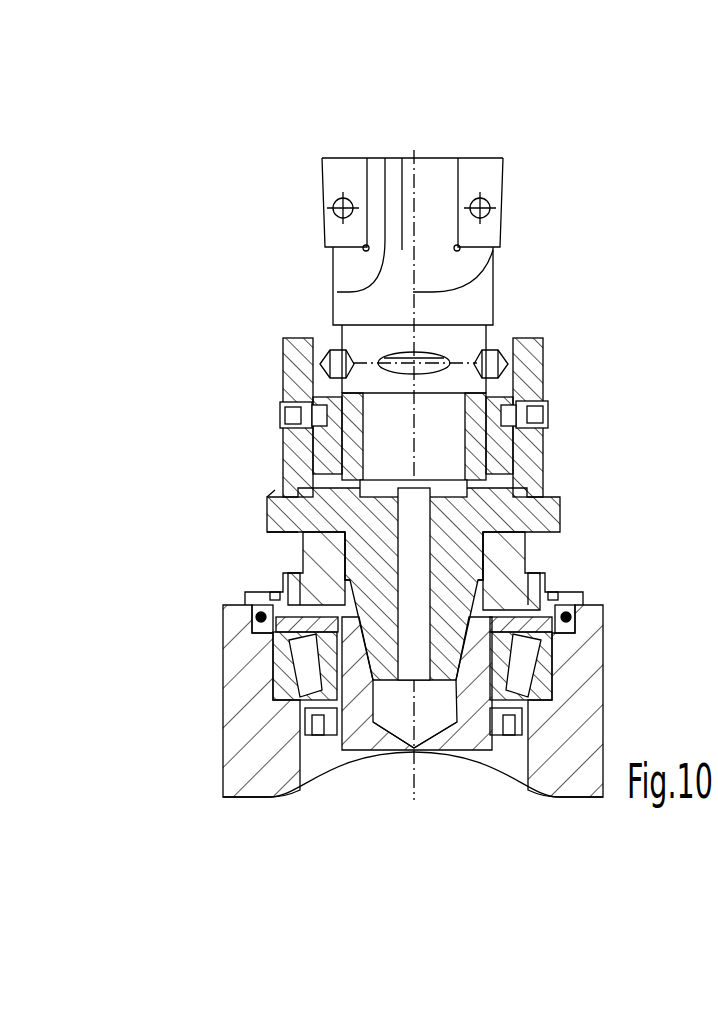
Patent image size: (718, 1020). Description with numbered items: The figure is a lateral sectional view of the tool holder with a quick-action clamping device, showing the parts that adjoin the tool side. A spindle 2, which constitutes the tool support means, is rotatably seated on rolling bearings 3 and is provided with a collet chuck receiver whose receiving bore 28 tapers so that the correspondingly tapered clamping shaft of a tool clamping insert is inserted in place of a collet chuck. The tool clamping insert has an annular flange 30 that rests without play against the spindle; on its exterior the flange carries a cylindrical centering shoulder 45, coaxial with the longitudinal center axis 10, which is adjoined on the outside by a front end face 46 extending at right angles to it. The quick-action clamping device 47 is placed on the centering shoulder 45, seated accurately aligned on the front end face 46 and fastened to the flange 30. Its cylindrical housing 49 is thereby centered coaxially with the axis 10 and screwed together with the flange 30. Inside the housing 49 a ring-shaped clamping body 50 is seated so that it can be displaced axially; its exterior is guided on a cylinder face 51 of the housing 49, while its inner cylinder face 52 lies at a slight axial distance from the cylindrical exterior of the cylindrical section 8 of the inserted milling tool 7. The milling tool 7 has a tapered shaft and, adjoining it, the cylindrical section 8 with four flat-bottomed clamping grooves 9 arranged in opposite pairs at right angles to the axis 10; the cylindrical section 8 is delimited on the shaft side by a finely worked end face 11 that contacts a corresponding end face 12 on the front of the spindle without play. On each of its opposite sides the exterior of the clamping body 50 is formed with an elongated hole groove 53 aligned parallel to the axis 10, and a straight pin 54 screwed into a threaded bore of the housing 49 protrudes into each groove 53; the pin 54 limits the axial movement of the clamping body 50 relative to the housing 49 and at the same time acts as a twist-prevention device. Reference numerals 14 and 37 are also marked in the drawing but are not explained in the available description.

The spindle 2 is at (560, 770).
The rolling bearings 3 is at (552, 662).
The milling tool 7 is at (432, 176).
The cylindrical section 8 is at (465, 338).
The clamping grooves 9 is at (386, 350).
The center axis 10 is at (415, 770).
The end face 11 is at (282, 535).
The end face 12 is at (492, 565).
The clamping housing 14 is at (500, 337).
The receiving bore 28 is at (362, 752).
The annular flange 30 is at (495, 540).
The locking ring 37 is at (480, 618).
The centering shoulder 45 is at (545, 496).
The front end face 46 is at (300, 500).
The quick-action clamping device 47 is at (555, 388).
The housing 49 is at (540, 344).
The clamping body 50 is at (313, 433).
The cylinder face 51 is at (540, 453).
The cylinder face 52 is at (313, 470).
The elongated hole groove 53 is at (330, 346).
The straight pin 54 is at (283, 412).